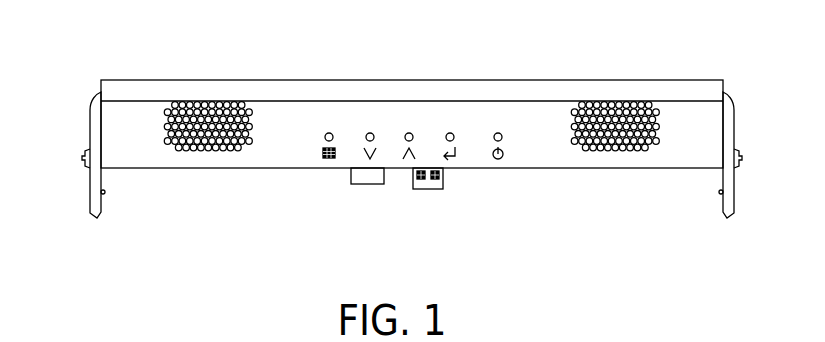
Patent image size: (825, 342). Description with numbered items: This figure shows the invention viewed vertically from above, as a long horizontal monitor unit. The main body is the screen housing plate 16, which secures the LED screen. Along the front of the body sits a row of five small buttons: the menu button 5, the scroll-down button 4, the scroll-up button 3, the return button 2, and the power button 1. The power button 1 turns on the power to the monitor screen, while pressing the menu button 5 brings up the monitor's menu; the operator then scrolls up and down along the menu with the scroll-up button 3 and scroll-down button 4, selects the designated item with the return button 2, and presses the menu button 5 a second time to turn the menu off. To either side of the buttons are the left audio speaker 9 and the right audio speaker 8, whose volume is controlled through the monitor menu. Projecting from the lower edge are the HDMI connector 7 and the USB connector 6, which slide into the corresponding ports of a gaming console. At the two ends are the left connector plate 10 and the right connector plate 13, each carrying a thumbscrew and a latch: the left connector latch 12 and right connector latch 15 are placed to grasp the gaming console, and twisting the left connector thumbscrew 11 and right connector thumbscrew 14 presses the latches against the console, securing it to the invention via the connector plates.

The power button 1 is at (498, 133).
The return button 2 is at (450, 133).
The scroll-up button 3 is at (409, 133).
The scroll-down button 4 is at (370, 133).
The menu button 5 is at (329, 133).
The USB connector 6 is at (428, 190).
The HDMI connector 7 is at (368, 185).
The right audio speaker 8 is at (603, 151).
The left audio speaker 9 is at (199, 151).
The left connector plate 10 is at (92, 104).
The left connector thumbscrew 11 is at (84, 158).
The left connector latch 12 is at (103, 196).
The right connector plate 13 is at (732, 104).
The right connector thumbscrew 14 is at (740, 158).
The right connector latch 15 is at (721, 196).
The screen housing plate 16 is at (253, 91).